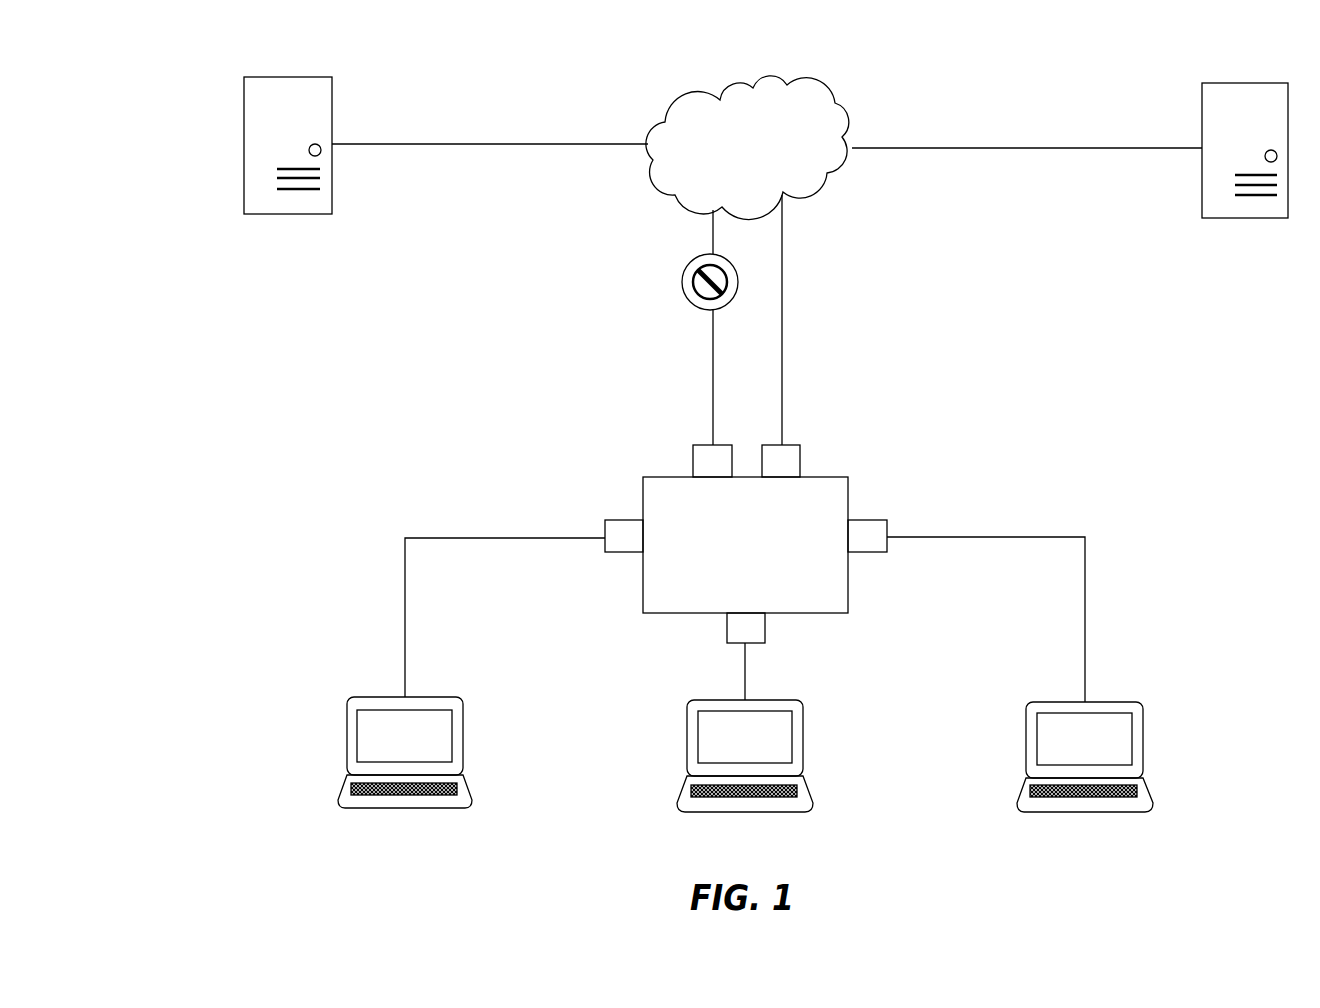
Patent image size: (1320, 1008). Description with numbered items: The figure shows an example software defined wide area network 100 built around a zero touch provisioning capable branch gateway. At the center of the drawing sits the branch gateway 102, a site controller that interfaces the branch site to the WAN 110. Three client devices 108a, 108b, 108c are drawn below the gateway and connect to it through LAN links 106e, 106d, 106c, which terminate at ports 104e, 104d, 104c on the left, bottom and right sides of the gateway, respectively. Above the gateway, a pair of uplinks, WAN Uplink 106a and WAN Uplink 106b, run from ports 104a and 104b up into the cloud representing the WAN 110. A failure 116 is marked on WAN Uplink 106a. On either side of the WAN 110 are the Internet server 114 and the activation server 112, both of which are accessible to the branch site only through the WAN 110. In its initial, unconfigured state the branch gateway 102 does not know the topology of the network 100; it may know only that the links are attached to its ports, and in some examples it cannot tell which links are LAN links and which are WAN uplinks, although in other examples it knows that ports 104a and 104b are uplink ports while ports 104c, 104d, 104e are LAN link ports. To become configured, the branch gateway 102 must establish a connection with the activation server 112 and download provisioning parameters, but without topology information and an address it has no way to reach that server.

The software defined wide area network 100 is at (197, 31).
The branch gateway 102 is at (745, 545).
The port 104a is at (693, 460).
The port 104b is at (800, 461).
The port 104c is at (878, 553).
The port 104d is at (727, 643).
The port 104e is at (627, 553).
The WAN uplink 106a is at (712, 385).
The WAN uplink 106b is at (783, 386).
The LAN link 106c is at (1083, 655).
The LAN link 106d is at (747, 674).
The LAN link 106e is at (403, 608).
The client device 108a is at (403, 766).
The client device 108b is at (743, 768).
The client device 108c is at (1083, 770).
The WAN 110 is at (747, 148).
The activation server 112 is at (1197, 215).
The Internet server 114 is at (245, 185).
The failure 116 is at (681, 283).